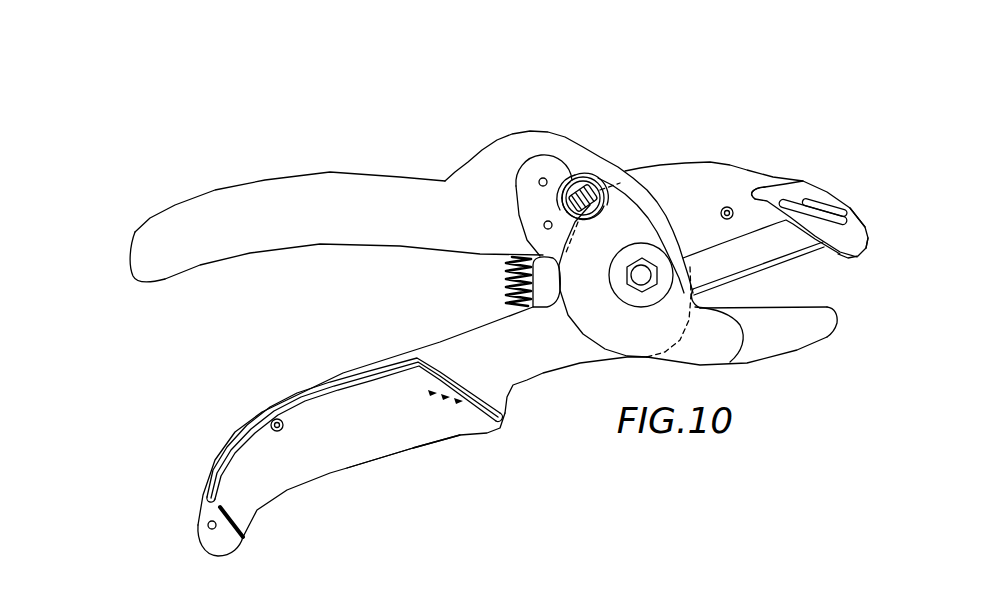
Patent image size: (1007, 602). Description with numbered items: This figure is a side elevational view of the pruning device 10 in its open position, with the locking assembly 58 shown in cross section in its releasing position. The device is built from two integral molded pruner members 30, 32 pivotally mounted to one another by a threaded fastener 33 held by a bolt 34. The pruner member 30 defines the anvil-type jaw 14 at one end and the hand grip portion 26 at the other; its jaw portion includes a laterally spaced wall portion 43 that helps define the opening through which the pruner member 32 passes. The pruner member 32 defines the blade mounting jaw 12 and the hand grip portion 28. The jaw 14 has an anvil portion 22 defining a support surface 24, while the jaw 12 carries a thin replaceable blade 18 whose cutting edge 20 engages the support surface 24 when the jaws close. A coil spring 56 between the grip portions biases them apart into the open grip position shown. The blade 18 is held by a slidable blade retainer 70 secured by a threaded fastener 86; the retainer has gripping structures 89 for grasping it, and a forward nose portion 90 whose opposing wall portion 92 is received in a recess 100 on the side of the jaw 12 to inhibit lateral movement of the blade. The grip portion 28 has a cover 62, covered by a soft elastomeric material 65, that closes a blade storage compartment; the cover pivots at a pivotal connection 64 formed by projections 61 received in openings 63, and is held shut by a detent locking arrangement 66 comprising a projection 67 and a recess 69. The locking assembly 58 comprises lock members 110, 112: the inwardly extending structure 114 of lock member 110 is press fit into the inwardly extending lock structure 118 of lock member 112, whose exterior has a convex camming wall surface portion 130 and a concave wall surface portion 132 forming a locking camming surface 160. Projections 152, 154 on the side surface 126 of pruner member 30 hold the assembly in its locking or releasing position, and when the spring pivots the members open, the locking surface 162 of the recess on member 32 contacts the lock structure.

The pruning device 10 is at (598, 70).
The blade mounting jaw 12 is at (747, 172).
The anvil-type jaw 14 is at (777, 348).
The replaceable blade 18 is at (820, 250).
The cutting edge 20 is at (777, 260).
The anvil portion 22 is at (835, 312).
The support surface 24 is at (758, 307).
The hand grip portion 26 is at (333, 237).
The hand grip portion 28 is at (450, 342).
The pruner member 30 is at (322, 186).
The pruner member 32 is at (507, 382).
The threaded fastener 33 is at (625, 277).
The bolt 34 is at (643, 290).
The wall portion 43 is at (636, 212).
The coil spring 56 is at (507, 262).
The locking assembly 58 is at (592, 155).
The projections 61 is at (207, 522).
The cover 62 is at (407, 437).
The openings 63 is at (217, 535).
The pivotal connection 64 is at (243, 537).
The elastomeric material 65 is at (307, 477).
The locking arrangement 66 is at (263, 450).
The projection 67 is at (283, 421).
The recess 69 is at (284, 430).
The blade retainer 70 is at (797, 182).
The threaded fastener 86 is at (721, 213).
The gripping structures 89 is at (830, 202).
The forward nose portion 90 is at (887, 195).
The opposing wall portion 92 is at (872, 226).
The recess 100 is at (758, 188).
The lock member 110 is at (596, 178).
The lock member 112 is at (565, 216).
The inwardly extending structure 114 is at (560, 172).
The inwardly extending lock structure 118 is at (584, 173).
The side surface 126 is at (527, 160).
The convex camming wall surface portion 130 is at (562, 201).
The concave wall surface portion 132 is at (600, 216).
The projection 152 is at (538, 181).
The projection 154 is at (544, 226).
The locking camming surface 160 is at (620, 176).
The locking surface 162 is at (566, 247).